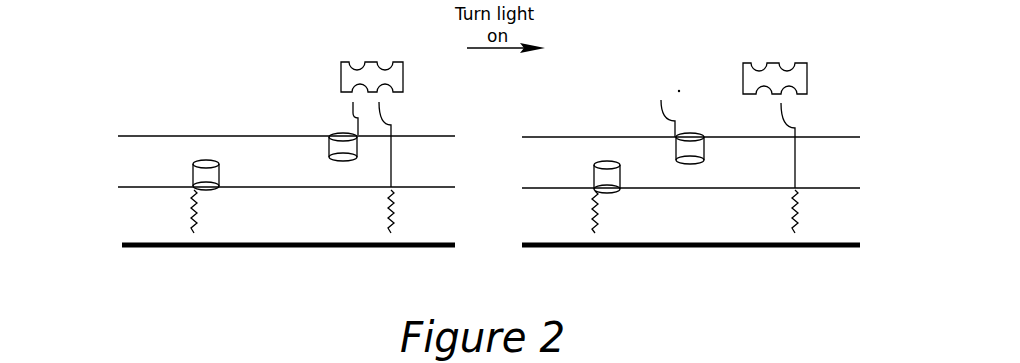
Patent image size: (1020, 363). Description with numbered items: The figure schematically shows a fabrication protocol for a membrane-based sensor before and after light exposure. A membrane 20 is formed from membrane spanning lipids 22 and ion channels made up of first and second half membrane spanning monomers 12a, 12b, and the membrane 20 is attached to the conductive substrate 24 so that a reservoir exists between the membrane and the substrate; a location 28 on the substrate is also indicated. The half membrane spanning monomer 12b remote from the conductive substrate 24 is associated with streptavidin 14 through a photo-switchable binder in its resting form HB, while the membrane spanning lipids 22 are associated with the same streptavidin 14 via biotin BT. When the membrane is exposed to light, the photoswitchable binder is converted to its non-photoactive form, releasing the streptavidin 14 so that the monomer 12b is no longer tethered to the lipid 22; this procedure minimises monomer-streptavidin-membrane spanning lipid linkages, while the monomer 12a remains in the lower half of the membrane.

The membrane 20 is at (126, 160).
The first half membrane spanning monomer 12a is at (220, 181).
The second half membrane spanning monomer 12b is at (337, 133).
The streptavidin 14 is at (342, 64).
The membrane spanning lipid 22 is at (394, 163).
The conductive substrate 24 is at (152, 248).
The tether point 28 is at (254, 232).